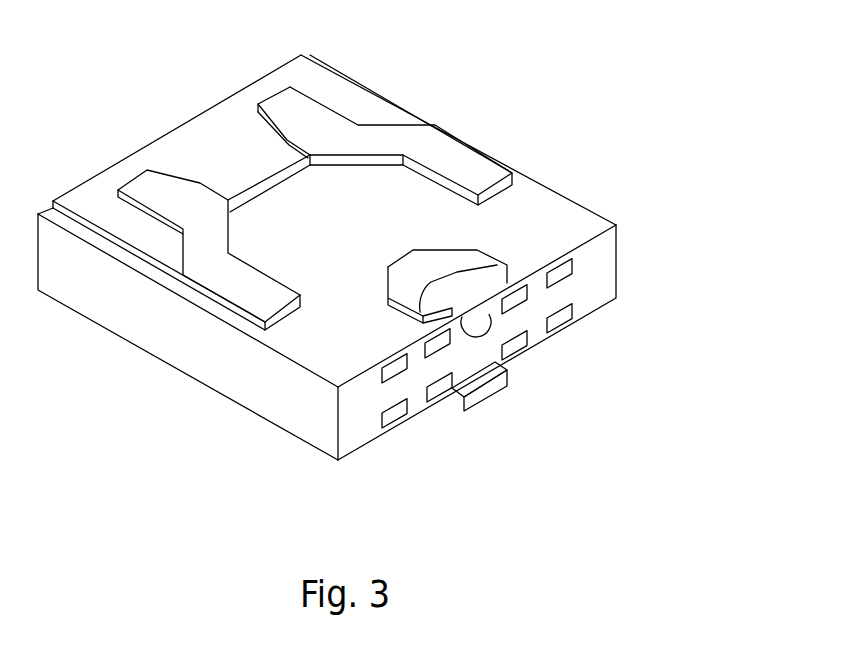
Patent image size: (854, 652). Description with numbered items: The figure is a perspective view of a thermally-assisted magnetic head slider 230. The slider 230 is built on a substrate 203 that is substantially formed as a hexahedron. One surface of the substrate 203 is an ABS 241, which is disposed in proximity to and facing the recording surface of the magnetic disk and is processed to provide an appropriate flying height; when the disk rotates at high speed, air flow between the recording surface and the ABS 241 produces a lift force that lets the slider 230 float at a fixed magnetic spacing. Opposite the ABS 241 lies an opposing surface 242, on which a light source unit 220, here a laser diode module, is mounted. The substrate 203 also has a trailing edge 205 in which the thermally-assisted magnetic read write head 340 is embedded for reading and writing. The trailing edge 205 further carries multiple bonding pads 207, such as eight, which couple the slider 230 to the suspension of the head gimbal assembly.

The thermally-assisted magnetic head slider 230 is at (62, 22).
The ABS 241 is at (360, 137).
The substrate 203 is at (417, 213).
The trailing edge 205 is at (588, 285).
The bonding pads 207 is at (555, 320).
The thermally-assisted magnetic read write head 340 is at (473, 327).
The light source unit 220 is at (470, 400).
The opposing surface 242 is at (407, 423).